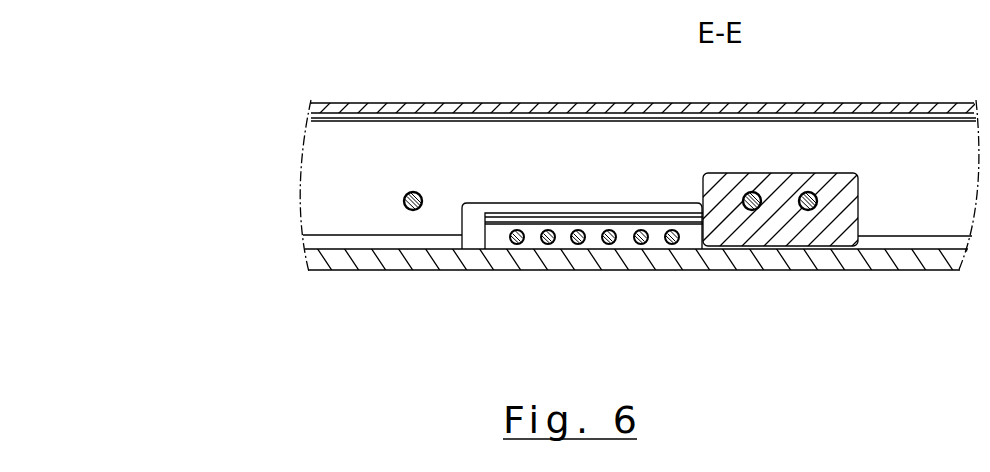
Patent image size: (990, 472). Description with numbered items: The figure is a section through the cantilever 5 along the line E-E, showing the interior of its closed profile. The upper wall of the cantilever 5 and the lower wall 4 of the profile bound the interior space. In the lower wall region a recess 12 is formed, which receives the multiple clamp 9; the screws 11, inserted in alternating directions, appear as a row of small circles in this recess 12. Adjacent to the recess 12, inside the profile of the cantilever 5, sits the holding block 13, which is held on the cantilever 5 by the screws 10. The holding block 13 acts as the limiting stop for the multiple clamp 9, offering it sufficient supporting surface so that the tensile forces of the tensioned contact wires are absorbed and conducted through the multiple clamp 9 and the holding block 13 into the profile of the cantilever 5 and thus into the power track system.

The lower housing wall 4 is at (937, 262).
The cantilever 5 is at (616, 101).
The multiple clamp 9 is at (625, 243).
The screws 10 is at (411, 211).
The screws 11 is at (543, 243).
The recess 12 is at (475, 238).
The holding block 13 is at (755, 237).